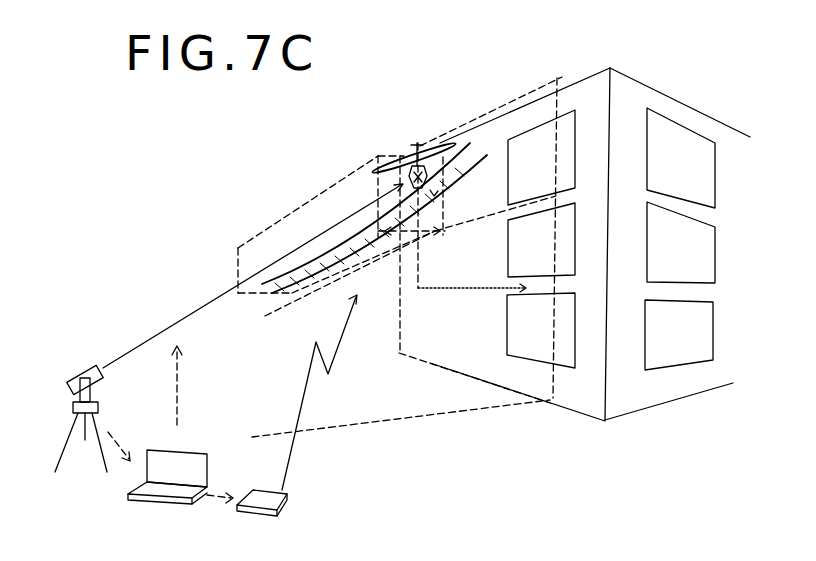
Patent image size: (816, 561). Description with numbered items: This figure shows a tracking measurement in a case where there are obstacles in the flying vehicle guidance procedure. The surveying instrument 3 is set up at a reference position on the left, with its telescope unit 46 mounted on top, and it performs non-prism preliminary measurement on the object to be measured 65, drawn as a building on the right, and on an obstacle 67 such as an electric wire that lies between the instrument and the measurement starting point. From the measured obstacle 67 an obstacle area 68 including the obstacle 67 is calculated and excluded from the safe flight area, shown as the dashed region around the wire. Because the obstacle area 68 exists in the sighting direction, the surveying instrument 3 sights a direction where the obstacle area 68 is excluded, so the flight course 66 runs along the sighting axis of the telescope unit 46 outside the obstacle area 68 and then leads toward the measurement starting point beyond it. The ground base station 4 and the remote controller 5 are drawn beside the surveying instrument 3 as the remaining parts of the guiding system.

The object to be measured 65 is at (680, 100).
The obstacle area 68 is at (310, 200).
The obstacle 67 is at (307, 262).
The flight course 66 is at (297, 300).
The telescope unit 46 is at (88, 366).
The surveying instrument 3 is at (72, 405).
The ground base station 4 is at (150, 507).
The remote controller 5 is at (287, 506).